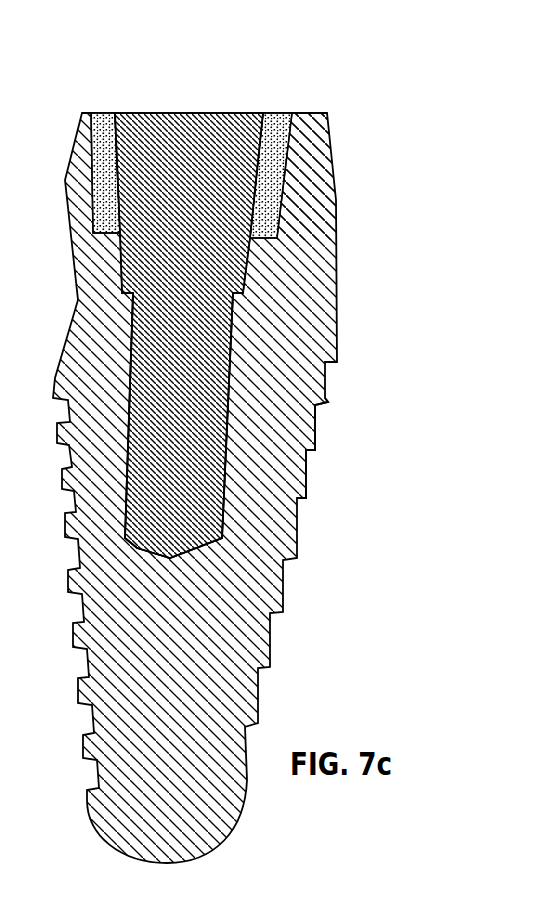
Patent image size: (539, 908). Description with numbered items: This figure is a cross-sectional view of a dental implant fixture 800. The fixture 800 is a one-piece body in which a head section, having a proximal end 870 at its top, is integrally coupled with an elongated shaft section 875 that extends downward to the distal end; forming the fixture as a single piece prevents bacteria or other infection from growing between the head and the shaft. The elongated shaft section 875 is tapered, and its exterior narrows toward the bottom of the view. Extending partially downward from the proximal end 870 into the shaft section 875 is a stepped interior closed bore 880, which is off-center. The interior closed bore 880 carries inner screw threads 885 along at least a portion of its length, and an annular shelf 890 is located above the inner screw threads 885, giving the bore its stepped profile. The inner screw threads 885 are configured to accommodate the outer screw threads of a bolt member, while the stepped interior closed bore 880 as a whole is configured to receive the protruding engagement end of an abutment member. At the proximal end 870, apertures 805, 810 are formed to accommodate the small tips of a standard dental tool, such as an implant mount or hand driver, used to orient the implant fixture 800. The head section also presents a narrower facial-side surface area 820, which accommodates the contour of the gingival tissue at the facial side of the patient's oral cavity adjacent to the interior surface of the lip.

The dental implant fixture 800 is at (305, 90).
The aperture 805 is at (278, 162).
The aperture 810 is at (92, 112).
The facial-side surface area 820 is at (78, 279).
The proximal end 870 is at (142, 113).
The elongated shaft section 875 is at (316, 450).
The stepped interior closed bore 880 is at (245, 113).
The inner screw threads 885 is at (228, 390).
The annular shelf 890 is at (244, 294).